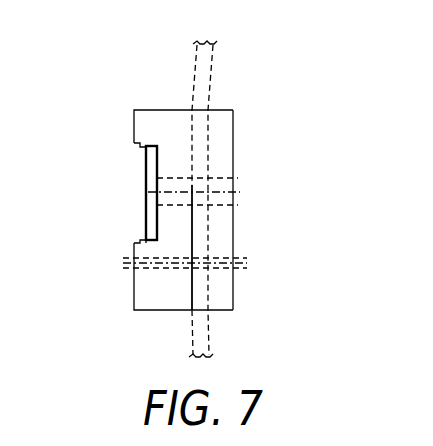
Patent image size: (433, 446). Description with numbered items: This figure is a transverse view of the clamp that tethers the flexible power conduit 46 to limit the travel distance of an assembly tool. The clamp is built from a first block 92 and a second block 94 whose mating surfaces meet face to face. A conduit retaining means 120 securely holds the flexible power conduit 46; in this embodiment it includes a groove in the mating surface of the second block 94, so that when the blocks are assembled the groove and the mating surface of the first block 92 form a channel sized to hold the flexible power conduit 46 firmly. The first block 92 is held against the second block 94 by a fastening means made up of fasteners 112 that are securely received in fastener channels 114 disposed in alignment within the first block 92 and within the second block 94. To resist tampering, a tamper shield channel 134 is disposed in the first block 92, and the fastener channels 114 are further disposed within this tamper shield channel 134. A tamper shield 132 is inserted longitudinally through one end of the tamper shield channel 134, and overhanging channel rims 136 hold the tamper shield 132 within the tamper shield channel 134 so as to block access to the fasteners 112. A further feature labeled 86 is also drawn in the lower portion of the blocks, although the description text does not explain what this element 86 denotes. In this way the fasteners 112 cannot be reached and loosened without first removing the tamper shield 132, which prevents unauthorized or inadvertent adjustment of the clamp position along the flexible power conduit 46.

The flexible power conduit 46 is at (250, 337).
The passage 86 is at (133, 268).
The first block 92 is at (134, 117).
The second block 94 is at (233, 128).
The fasteners 112 is at (170, 185).
The fastener channels 114 is at (208, 198).
The conduit retaining means 120 is at (203, 295).
The tamper shield 132 is at (147, 185).
The tamper shield channel 134 is at (153, 143).
The overhanging channel rims 136 is at (140, 143).